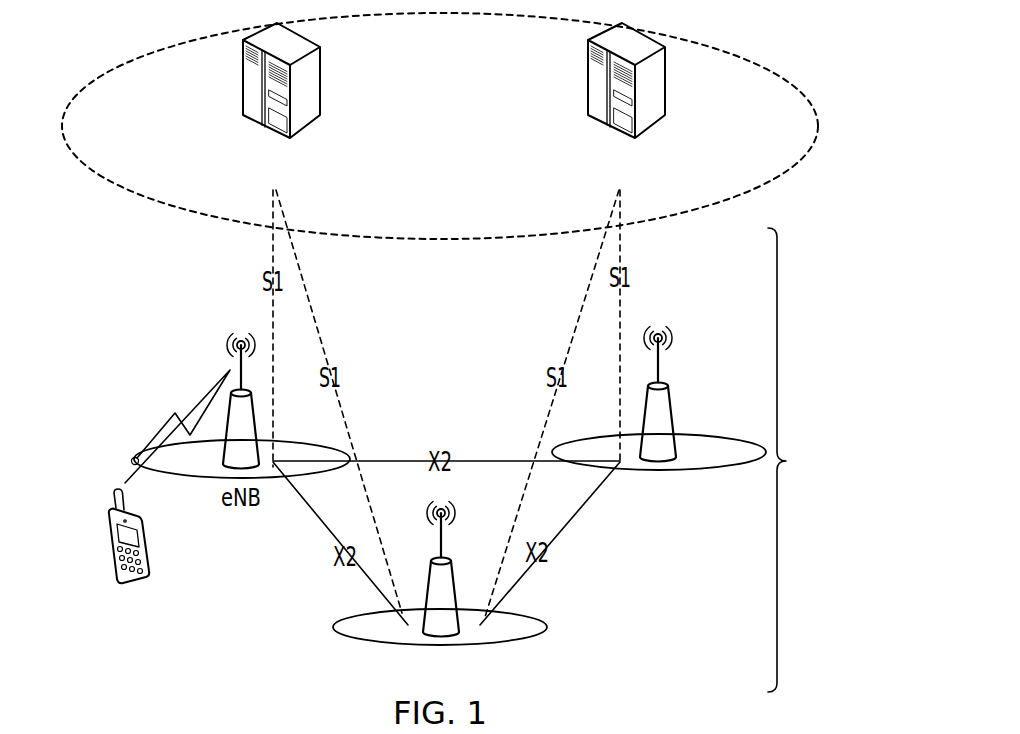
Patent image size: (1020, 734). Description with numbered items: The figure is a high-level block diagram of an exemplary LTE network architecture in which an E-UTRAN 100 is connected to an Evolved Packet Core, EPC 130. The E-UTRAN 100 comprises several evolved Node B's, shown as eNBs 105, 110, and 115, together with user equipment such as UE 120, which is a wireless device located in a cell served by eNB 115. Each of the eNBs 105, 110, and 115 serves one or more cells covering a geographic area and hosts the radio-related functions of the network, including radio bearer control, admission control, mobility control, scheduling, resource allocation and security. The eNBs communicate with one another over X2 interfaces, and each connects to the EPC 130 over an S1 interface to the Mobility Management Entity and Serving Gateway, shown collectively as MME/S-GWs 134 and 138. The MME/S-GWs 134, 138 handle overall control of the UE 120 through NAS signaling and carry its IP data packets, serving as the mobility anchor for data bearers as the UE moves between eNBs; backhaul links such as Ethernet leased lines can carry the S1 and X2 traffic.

The E-UTRAN 100 is at (833, 480).
The eNB 105 is at (677, 410).
The eNB 110 is at (421, 613).
The eNB 115 is at (227, 410).
The user equipment (UE) 120 is at (130, 630).
The Evolved Packet Core (EPC) 130 is at (813, 148).
The MME/S-GW 134 is at (587, 73).
The MME/S-GW 138 is at (323, 88).